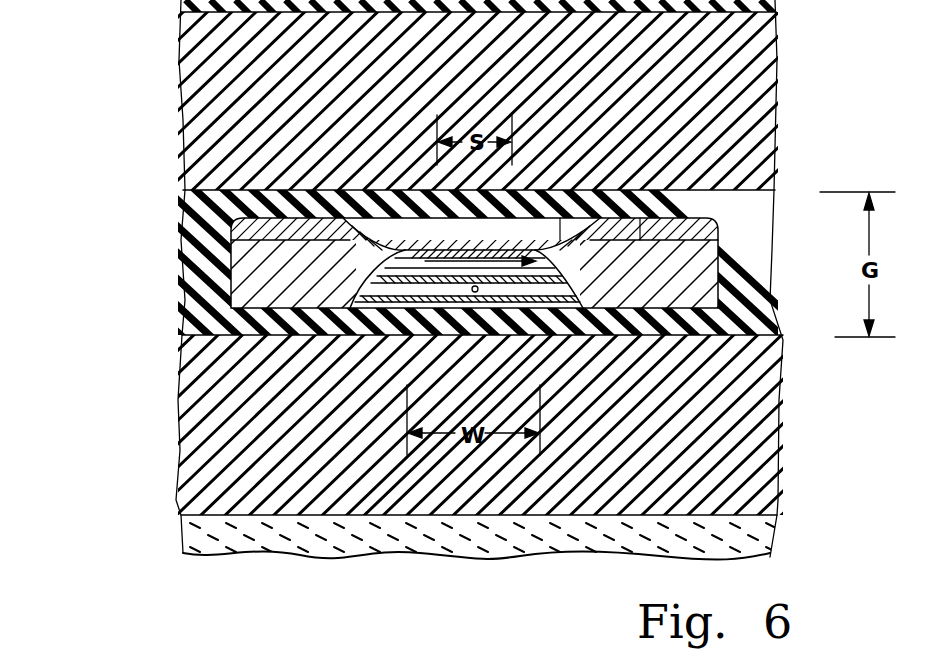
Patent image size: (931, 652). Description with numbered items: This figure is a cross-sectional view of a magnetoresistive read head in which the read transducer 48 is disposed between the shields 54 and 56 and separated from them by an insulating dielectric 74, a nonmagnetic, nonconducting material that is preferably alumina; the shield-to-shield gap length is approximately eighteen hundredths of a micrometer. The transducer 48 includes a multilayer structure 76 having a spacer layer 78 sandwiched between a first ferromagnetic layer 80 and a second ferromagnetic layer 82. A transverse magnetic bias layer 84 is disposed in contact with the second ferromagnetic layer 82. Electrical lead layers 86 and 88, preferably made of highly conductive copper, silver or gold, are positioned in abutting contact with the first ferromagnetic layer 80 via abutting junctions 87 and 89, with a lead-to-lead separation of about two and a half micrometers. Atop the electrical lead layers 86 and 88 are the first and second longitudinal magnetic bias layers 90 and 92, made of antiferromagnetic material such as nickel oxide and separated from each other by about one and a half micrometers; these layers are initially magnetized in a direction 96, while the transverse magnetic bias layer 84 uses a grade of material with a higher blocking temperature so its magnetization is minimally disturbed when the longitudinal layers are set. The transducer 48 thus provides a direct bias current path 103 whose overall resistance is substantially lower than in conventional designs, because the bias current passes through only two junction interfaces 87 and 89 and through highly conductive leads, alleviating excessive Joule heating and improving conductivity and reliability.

The read transducer 48 is at (108, 243).
The shield 54 is at (197, 430).
The shield 56 is at (205, 85).
The insulating dielectric 74 is at (198, 291).
The multilayer structure 76 is at (522, 309).
The spacer layer 78 is at (380, 280).
The first ferromagnetic layer 80 is at (548, 268).
The second ferromagnetic layer 82 is at (578, 298).
The transverse magnetic bias layer 84 is at (358, 283).
The electrical lead layer 86 is at (277, 289).
The abutting junction 87 is at (350, 226).
The electrical lead layer 88 is at (692, 287).
The abutting junction 89 is at (596, 222).
The first longitudinal magnetic bias layer 90 is at (284, 220).
The second longitudinal magnetic bias layer 92 is at (655, 222).
The magnetization direction 96 is at (508, 250).
The direct bias current path 103 is at (424, 248).